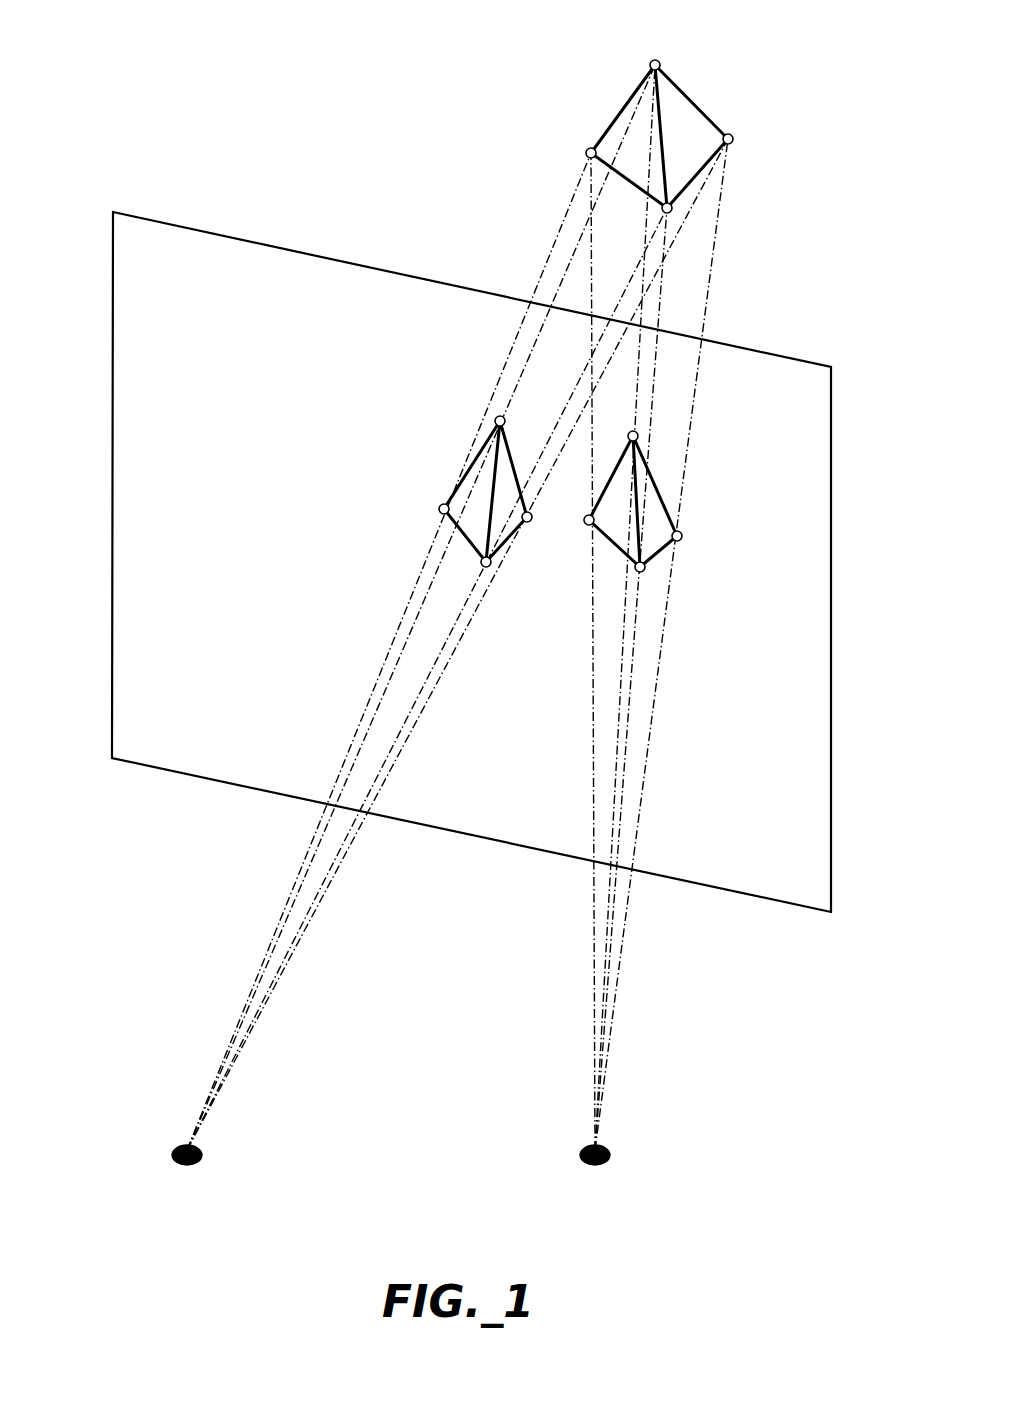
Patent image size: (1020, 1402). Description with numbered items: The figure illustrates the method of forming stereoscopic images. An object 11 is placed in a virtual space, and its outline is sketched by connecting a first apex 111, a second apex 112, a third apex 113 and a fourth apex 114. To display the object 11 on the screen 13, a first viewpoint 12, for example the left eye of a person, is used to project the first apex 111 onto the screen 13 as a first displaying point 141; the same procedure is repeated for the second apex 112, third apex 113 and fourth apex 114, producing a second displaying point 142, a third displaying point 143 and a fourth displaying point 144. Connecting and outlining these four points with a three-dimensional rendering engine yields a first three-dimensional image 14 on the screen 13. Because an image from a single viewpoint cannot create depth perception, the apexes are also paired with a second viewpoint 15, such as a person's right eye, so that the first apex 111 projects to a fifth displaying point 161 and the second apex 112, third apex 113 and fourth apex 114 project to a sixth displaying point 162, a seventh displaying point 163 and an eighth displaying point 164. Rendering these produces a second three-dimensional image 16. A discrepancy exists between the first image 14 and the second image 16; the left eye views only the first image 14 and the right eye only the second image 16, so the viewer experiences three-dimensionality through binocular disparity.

The object 11 is at (683, 113).
The first apex 111 is at (587, 149).
The second apex 112 is at (672, 211).
The third apex 113 is at (734, 137).
The fourth apex 114 is at (650, 60).
The first viewpoint 12 is at (175, 1150).
The screen 13 is at (263, 240).
The first 3D image 14 is at (470, 503).
The first displaying point 141 is at (441, 513).
The second displaying point 142 is at (482, 565).
The third displaying point 143 is at (527, 522).
The fourth displaying point 144 is at (496, 417).
The second viewpoint 15 is at (606, 1150).
The second 3D image 16 is at (655, 540).
The fifth displaying point 161 is at (588, 525).
The sixth displaying point 162 is at (643, 572).
The seventh displaying point 163 is at (681, 535).
The eighth displaying point 164 is at (638, 435).